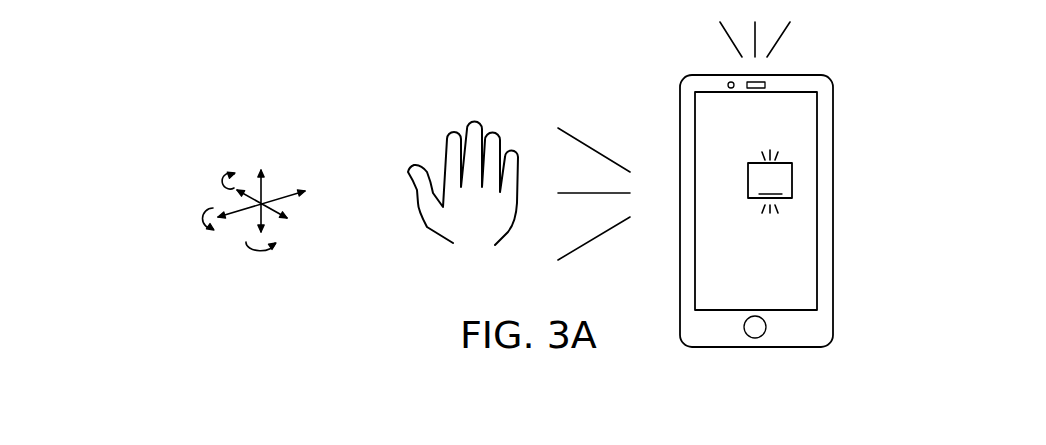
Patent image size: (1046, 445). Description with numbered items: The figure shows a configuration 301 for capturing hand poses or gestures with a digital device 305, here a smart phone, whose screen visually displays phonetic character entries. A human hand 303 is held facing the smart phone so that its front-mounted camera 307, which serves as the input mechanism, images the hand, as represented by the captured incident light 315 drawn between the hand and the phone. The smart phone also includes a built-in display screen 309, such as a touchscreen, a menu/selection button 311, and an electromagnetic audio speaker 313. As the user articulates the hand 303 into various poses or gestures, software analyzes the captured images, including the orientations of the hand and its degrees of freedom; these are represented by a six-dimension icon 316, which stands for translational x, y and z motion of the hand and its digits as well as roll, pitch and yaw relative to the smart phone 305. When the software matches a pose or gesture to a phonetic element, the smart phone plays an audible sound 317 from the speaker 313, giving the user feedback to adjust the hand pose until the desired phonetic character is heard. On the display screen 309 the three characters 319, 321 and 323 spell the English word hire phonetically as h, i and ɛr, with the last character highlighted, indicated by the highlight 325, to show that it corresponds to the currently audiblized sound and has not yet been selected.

The configuration 301 is at (446, 74).
The human hand 303 is at (410, 168).
The digital device 305 is at (833, 242).
The front-mounted camera 307 is at (725, 84).
The display screen 309 is at (805, 270).
The menu/selection button 311 is at (765, 333).
The electromagnetic audio speaker 313 is at (767, 85).
The captured incident light 315 is at (573, 253).
The six-dimension icon 316 is at (283, 200).
The audible sound 317 is at (780, 38).
The character h 319 is at (717, 199).
The character i 321 is at (738, 199).
The character ɛr 323 is at (767, 220).
The highlight 325 is at (792, 182).